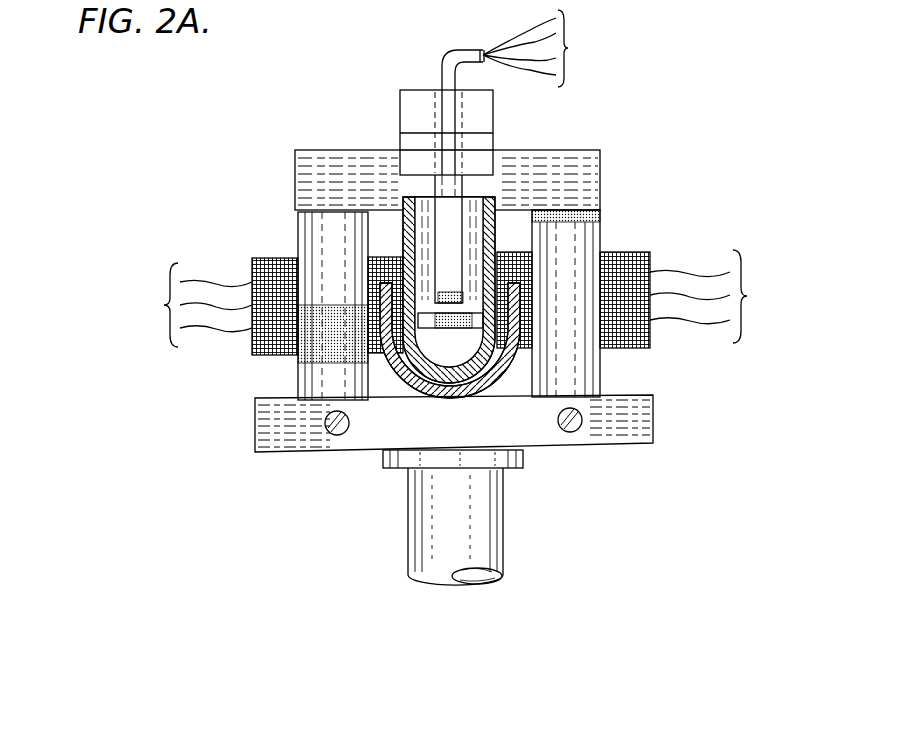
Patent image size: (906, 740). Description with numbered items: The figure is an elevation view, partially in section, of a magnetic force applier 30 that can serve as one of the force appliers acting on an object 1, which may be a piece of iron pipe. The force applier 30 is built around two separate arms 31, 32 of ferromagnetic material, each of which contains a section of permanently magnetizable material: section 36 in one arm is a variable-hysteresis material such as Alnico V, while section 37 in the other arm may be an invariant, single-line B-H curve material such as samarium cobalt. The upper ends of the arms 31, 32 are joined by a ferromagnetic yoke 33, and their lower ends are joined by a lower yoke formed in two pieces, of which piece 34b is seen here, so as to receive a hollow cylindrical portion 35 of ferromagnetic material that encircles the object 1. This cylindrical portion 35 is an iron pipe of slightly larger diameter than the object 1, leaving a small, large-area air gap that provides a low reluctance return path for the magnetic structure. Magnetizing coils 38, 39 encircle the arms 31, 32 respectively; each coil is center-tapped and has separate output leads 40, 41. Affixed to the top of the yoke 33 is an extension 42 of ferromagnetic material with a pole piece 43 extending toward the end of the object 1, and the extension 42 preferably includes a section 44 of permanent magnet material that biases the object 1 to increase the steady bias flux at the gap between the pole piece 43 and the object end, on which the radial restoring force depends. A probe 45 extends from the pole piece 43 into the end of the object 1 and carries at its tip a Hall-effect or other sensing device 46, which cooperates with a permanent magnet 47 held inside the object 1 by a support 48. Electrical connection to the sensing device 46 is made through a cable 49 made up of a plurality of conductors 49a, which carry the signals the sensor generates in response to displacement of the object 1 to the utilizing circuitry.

The object 1 is at (487, 530).
The magnetic force applier 30 is at (615, 240).
The arm 31 is at (600, 372).
The arm 32 is at (320, 383).
The yoke of ferromagnetic material 33 is at (565, 160).
The yoke piece 34b is at (640, 428).
The hollow cylindrical portion 35 is at (523, 455).
The section of permanently magnetizable material 36 is at (317, 333).
The section of permanently magnetizable material 37 is at (600, 212).
The magnetizing coil 38 is at (627, 253).
The magnetizing coil 39 is at (268, 263).
The output leads 40 is at (718, 296).
The output leads 41 is at (189, 305).
The extension 42 is at (485, 115).
The pole piece 43 is at (417, 160).
The section of permanent magnet material 44 is at (483, 142).
The probe 45 is at (447, 242).
The sensing device 46 is at (460, 300).
The permanent magnet 47 is at (458, 328).
The support 48 is at (428, 328).
The cable 49 is at (440, 110).
The conductors 49a is at (549, 48).